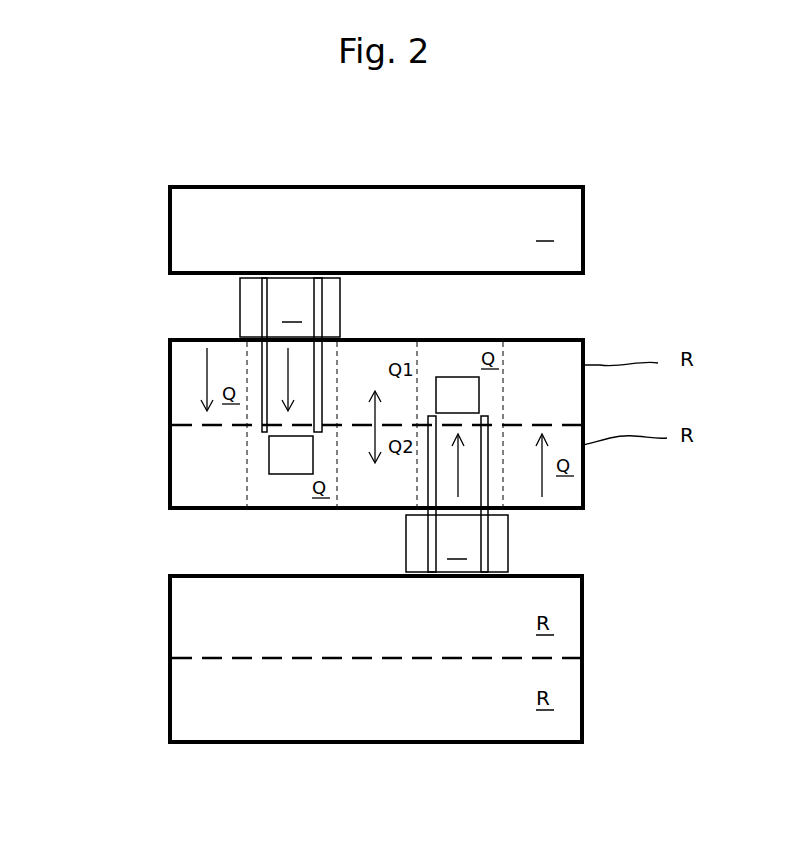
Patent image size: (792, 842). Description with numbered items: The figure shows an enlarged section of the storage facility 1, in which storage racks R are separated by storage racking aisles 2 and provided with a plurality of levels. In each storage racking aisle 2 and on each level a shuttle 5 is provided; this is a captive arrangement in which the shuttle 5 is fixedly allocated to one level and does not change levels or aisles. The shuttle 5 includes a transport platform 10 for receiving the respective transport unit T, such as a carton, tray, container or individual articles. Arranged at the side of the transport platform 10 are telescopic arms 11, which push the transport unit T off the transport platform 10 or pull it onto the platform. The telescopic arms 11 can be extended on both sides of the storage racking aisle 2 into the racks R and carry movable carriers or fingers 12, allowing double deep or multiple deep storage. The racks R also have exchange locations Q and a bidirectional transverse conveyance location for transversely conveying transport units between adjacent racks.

The storage facility 1 is at (668, 166).
The storage racking aisle 2 is at (410, 411).
The shuttle 5 is at (233, 303).
The transport platform 10 is at (374, 425).
The telescopic arm 11 is at (260, 370).
The carrier or finger 12 is at (267, 436).